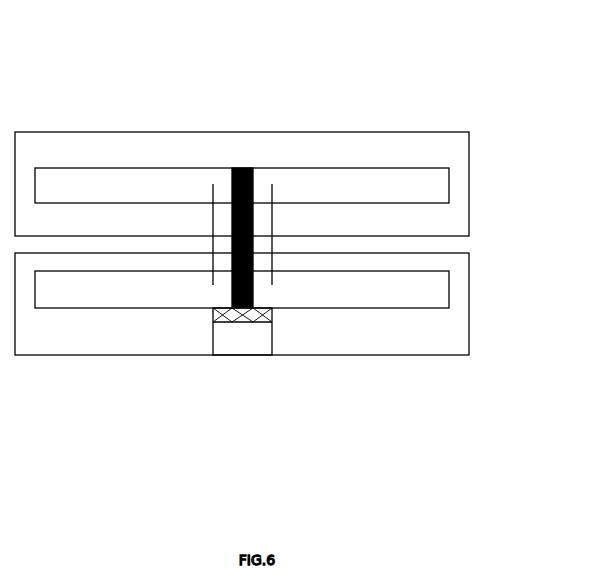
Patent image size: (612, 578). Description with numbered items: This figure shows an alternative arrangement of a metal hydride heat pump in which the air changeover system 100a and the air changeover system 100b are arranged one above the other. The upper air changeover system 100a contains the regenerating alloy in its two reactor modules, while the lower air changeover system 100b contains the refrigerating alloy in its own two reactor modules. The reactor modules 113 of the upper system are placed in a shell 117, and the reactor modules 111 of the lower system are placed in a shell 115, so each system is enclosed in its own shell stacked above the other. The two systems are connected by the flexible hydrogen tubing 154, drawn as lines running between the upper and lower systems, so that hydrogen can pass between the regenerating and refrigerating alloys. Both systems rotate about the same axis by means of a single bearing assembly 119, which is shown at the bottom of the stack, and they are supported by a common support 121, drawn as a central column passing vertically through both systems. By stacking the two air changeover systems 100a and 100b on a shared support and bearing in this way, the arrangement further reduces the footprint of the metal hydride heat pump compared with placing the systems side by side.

The air changeover system 100a is at (297, 118).
The air changeover system 100b is at (297, 370).
The shell 117 is at (470, 143).
The reactor modules 113 is at (411, 182).
The common support 121 is at (258, 164).
The flexible hydrogen tubing 154 is at (219, 252).
The reactor modules 111 is at (414, 286).
The shell 115 is at (471, 324).
The single bearing assembly 119 is at (263, 324).